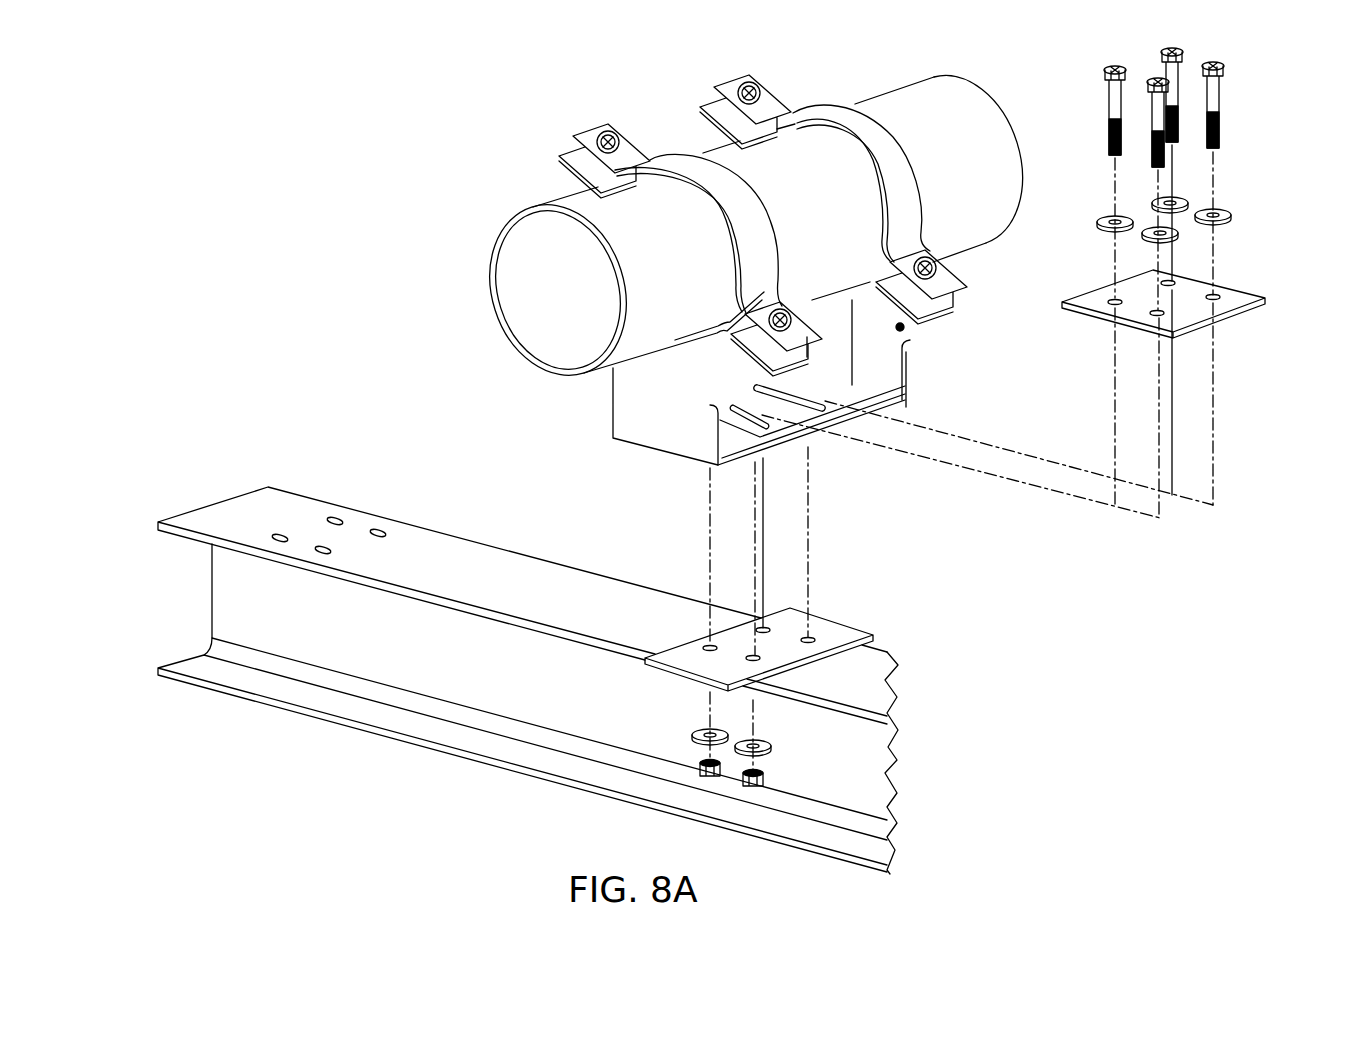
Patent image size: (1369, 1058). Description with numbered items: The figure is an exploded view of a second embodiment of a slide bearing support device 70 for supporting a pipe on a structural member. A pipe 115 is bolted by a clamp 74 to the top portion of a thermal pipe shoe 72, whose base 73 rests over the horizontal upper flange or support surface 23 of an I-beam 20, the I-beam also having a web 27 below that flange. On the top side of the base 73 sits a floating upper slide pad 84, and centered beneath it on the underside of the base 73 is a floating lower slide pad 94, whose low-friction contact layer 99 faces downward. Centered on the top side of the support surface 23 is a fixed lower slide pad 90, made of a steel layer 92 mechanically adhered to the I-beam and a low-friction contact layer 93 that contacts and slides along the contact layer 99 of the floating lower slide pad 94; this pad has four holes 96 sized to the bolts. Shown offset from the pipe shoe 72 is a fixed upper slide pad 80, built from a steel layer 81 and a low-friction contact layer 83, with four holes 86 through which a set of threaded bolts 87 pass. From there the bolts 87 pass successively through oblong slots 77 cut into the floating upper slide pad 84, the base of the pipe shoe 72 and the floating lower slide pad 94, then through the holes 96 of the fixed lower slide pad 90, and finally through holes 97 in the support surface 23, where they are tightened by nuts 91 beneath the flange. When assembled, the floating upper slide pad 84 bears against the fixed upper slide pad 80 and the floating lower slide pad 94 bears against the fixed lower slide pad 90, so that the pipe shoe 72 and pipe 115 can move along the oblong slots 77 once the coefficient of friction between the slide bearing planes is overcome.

The I-beam 20 is at (216, 688).
The support surface 23 is at (442, 539).
The web of beam 27 is at (206, 608).
The holes 97 is at (334, 516).
The slide bearing support device 70 is at (372, 341).
The pipe shoe 72 is at (613, 404).
The base 73 is at (856, 393).
The clamp 74 is at (608, 134).
The oblong slots 77 is at (719, 415).
The floating upper slide pad 84 is at (756, 407).
The floating lower slide pad 94 is at (788, 460).
The low-friction contact layer 99 is at (886, 410).
The pipe 115 is at (514, 245).
The fixed lower slide pad 90 is at (660, 655).
The steel layer 92 is at (719, 616).
The low-friction contact layer 93 is at (680, 638).
The holes 96 is at (816, 637).
The nuts 91 is at (764, 774).
The fixed upper slide pad 80 is at (1234, 302).
The steel layer 81 is at (1252, 290).
The low-friction contact layer 83 is at (1200, 283).
The holes 86 is at (1214, 296).
The bolts 87 is at (1224, 100).